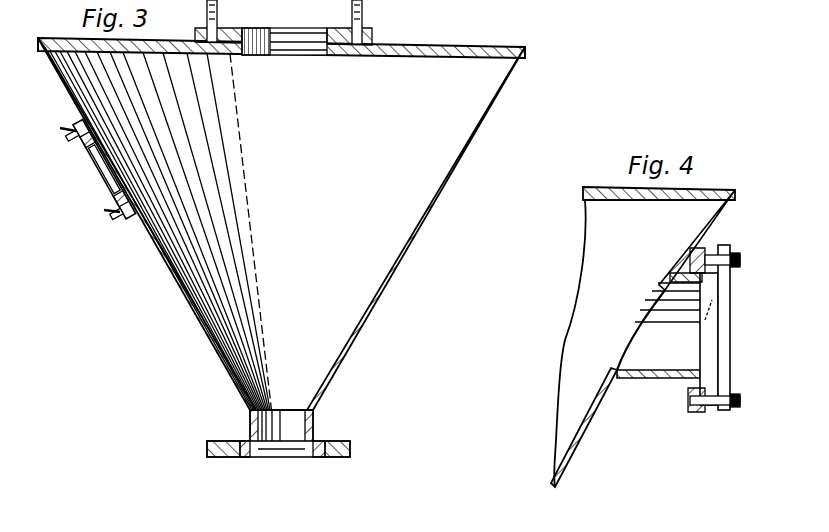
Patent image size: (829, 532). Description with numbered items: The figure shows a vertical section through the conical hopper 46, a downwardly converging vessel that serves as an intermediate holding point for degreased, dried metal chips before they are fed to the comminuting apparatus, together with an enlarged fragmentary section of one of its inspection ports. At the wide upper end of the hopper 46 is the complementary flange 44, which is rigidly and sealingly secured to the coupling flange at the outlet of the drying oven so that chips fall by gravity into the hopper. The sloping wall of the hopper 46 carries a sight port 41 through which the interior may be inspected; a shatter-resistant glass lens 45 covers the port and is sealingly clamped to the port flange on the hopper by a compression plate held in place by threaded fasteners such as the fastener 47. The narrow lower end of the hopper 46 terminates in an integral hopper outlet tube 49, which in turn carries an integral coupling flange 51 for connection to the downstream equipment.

In FIG. 4, the sight port 41 is at (730, 370).
In FIG. 3, the complementary flange 44 is at (370, 43).
In FIG. 3, the shatter-resistant glass lens 45 is at (85, 157).
In FIG. 4, the shatter-resistant glass lens 45 is at (705, 320).
In FIG. 3, the conical hopper 46 is at (447, 181).
In FIG. 4, the conical hopper 46 is at (590, 437).
In FIG. 4, the threaded fastener 47 is at (735, 406).
In FIG. 3, the hopper outlet tube 49 is at (250, 420).
In FIG. 3, the integral coupling flange 51 is at (350, 448).